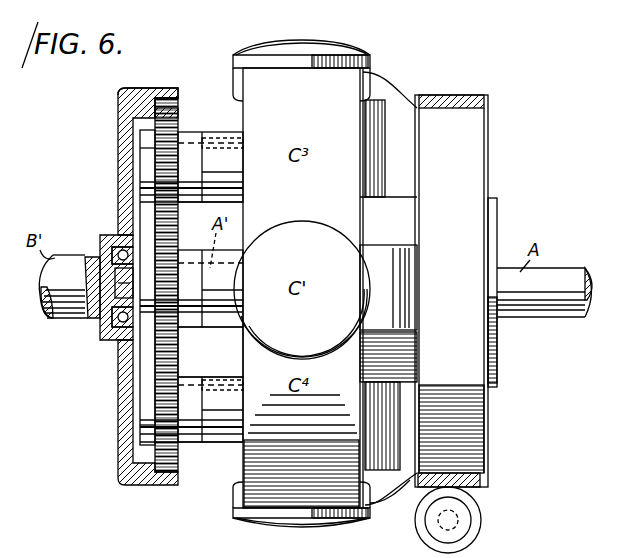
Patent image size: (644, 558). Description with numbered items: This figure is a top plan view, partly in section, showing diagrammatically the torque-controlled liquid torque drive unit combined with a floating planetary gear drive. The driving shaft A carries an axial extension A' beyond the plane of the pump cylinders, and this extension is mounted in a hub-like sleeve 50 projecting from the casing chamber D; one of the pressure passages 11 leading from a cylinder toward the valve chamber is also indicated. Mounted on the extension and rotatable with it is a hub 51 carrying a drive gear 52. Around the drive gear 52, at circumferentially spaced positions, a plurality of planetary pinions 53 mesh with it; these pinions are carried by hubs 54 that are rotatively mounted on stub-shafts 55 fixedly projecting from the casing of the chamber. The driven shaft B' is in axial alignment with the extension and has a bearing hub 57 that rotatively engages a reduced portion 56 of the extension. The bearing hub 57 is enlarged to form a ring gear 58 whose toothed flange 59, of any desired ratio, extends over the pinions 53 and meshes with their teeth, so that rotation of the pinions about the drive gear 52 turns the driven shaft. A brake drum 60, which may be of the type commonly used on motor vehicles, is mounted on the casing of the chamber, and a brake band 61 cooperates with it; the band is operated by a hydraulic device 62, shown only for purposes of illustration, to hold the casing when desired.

The pressure passage 11 is at (392, 96).
The hub-like sleeve 50 is at (224, 326).
The hub 51 is at (184, 255).
The drive gear 52 is at (150, 333).
The planetary pinions 53 is at (160, 150).
The hubs 54 is at (190, 134).
The stub-shafts 55 is at (210, 148).
The reduced portion 56 is at (118, 315).
The bearing hub 57 is at (102, 244).
The ring gear 58 is at (125, 118).
The toothed flange 59 is at (135, 92).
The brake drum 60 is at (478, 165).
The brake band 61 is at (463, 98).
The hydraulic device 62 is at (465, 530).